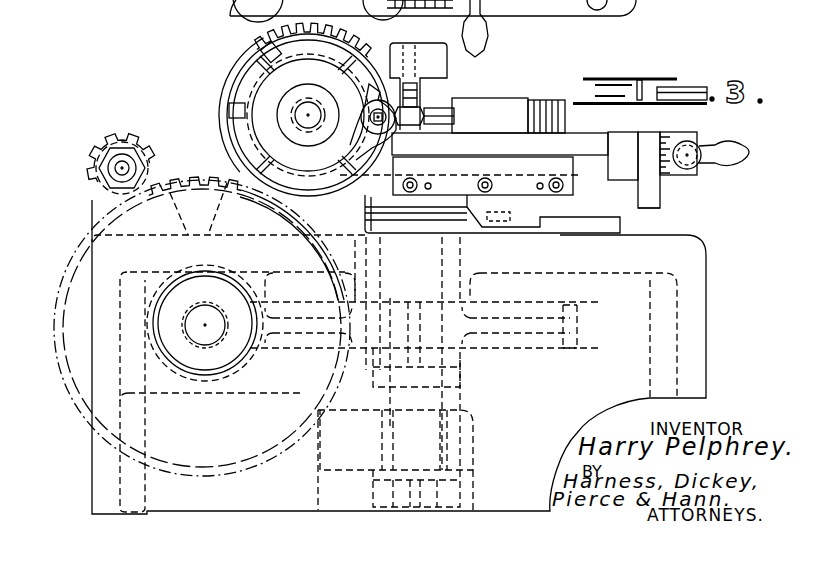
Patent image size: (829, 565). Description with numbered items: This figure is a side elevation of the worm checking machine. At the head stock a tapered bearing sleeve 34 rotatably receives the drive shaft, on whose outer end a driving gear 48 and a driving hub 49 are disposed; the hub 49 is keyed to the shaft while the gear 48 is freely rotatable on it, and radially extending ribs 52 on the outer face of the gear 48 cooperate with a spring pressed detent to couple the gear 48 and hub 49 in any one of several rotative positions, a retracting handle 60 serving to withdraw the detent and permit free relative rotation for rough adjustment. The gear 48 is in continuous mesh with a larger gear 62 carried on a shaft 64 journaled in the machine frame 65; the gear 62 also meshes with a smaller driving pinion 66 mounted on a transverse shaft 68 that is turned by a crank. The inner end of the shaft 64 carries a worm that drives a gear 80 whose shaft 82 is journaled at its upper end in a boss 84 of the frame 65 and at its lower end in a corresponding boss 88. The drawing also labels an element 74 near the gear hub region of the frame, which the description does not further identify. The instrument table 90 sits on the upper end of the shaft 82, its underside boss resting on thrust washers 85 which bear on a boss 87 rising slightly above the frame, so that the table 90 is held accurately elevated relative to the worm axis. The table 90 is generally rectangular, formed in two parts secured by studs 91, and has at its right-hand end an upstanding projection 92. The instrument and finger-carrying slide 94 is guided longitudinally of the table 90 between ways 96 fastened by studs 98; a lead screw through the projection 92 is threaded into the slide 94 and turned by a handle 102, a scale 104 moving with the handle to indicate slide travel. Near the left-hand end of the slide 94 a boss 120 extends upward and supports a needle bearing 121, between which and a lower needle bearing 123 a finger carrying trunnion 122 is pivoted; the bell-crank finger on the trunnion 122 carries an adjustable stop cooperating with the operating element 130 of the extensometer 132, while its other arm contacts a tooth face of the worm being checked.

The tapered bearing sleeve 34 is at (312, 112).
The driving gear 48 is at (242, 62).
The driving hub 49 is at (308, 115).
The radially extending ribs 52 is at (262, 47).
The retracting handle 60 is at (358, 151).
The larger gear 62 is at (95, 230).
The shaft 64 is at (206, 330).
The machine frame 65 is at (585, 235).
The driving pinion 66 is at (110, 145).
The shaft 68 is at (122, 165).
The hub 74 is at (208, 265).
The gear 80 is at (578, 322).
The shaft 82 is at (440, 402).
The boss 84 is at (482, 291).
The thrust washers 85 is at (346, 210).
The boss 87 is at (485, 192).
The boss 88 is at (472, 436).
The instrument table 90 is at (630, 214).
The studs 91 is at (548, 218).
The upstanding projection 92 is at (656, 135).
The instrument and finger-carrying slide 94 is at (580, 133).
The ways 96 is at (575, 185).
The studs 98 is at (410, 192).
The handle 102 is at (732, 166).
The scale 104 is at (668, 176).
The boss 120 is at (416, 95).
The needle bearing 121 is at (411, 86).
The finger carrying trunnion 122 is at (415, 108).
The lower needle bearing 123 is at (406, 50).
The operating element 130 is at (430, 113).
The extensometer 132 is at (527, 106).